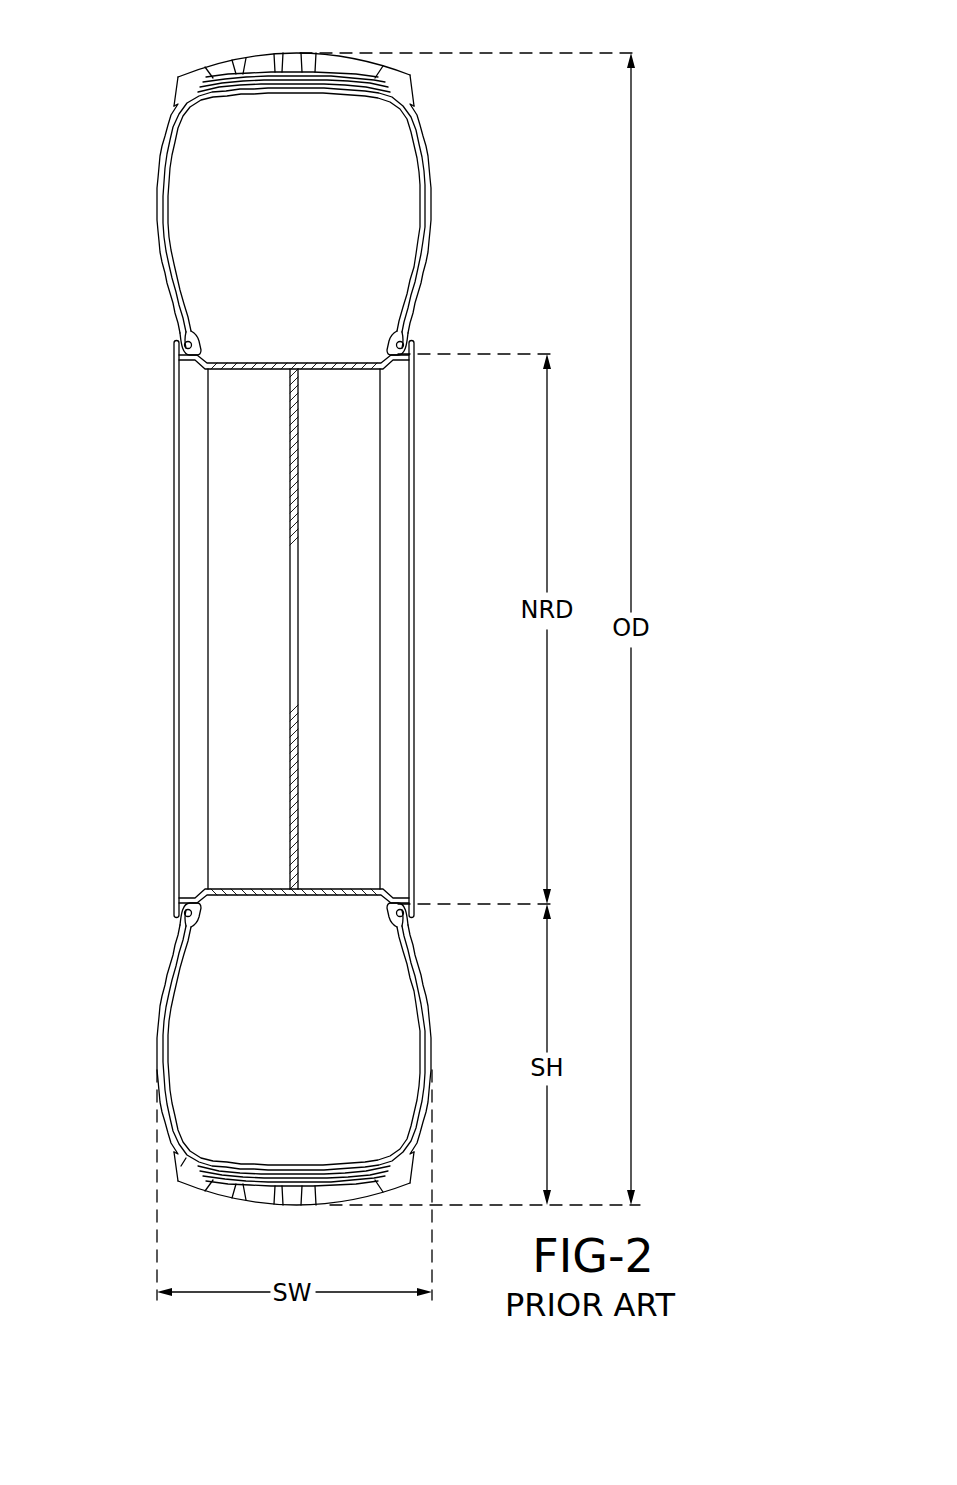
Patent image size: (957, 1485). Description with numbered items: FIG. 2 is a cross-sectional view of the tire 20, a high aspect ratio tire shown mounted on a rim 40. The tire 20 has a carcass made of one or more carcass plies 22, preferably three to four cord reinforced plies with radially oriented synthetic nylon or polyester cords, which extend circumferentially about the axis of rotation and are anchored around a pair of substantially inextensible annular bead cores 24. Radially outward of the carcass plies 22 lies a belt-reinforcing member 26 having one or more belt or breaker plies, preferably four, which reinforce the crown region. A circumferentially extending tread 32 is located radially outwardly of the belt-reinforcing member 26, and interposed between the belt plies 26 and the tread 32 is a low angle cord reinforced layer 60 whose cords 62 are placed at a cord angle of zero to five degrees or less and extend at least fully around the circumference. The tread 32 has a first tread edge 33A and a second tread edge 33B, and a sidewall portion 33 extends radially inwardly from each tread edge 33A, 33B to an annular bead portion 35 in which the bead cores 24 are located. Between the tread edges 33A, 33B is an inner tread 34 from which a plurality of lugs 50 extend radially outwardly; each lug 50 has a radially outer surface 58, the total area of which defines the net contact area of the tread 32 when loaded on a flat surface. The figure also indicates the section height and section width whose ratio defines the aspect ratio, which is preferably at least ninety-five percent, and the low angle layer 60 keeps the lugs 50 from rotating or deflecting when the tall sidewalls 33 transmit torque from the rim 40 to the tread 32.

The tire 20 is at (138, 227).
The carcass plies 22 is at (423, 178).
The annular bead cores 24 is at (184, 346).
The belt-reinforcing member 26 is at (329, 78).
The tread 32 is at (393, 68).
The sidewall portion 33 is at (432, 218).
The first tread edge 33A is at (408, 1183).
The second tread edge 33B is at (177, 1184).
The inner tread 34 is at (182, 100).
The annular bead portion 35 is at (181, 335).
The rim 40 is at (178, 569).
The lugs 50 is at (237, 66).
The radially outer surface 58 is at (293, 1210).
The low angle cord reinforced layer 60 is at (181, 106).
The cords 62 is at (250, 617).